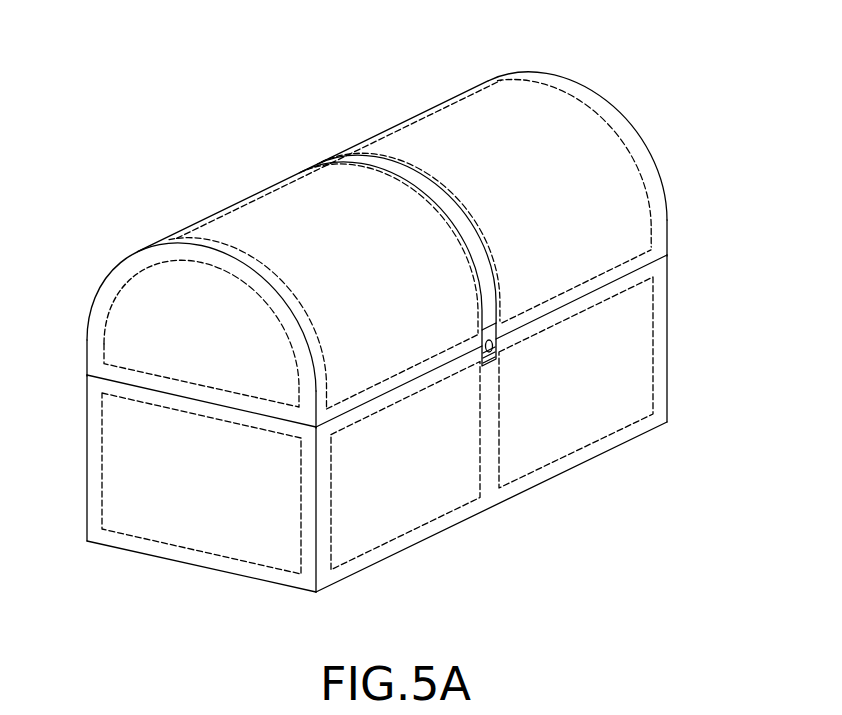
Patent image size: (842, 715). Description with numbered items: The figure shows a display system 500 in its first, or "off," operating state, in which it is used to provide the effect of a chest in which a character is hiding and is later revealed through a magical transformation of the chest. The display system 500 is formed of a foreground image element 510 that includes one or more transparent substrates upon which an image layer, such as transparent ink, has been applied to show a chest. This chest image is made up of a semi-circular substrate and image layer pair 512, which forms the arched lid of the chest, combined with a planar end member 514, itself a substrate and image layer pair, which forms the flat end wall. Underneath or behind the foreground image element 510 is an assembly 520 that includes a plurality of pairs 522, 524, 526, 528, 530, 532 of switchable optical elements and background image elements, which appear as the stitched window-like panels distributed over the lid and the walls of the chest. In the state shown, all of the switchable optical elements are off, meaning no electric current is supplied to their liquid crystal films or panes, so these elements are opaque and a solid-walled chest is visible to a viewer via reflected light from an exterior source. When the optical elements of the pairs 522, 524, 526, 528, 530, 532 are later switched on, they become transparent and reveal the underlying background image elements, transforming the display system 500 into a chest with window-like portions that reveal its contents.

The display system 500 is at (655, 61).
The foreground image element 510 is at (711, 297).
The semi-circular substrate and image layer pair 512 is at (661, 195).
The planar end member 514 is at (97, 403).
The assembly 520 is at (378, 98).
The pair of switchable optical element and background image element 522 is at (262, 192).
The pair of switchable optical element and background image element 524 is at (470, 78).
The pair of switchable optical element and background image element 526 is at (577, 468).
The pair of switchable optical element and background image element 528 is at (400, 555).
The pair of switchable optical element and background image element 530 is at (93, 304).
The pair of switchable optical element and background image element 532 is at (253, 566).